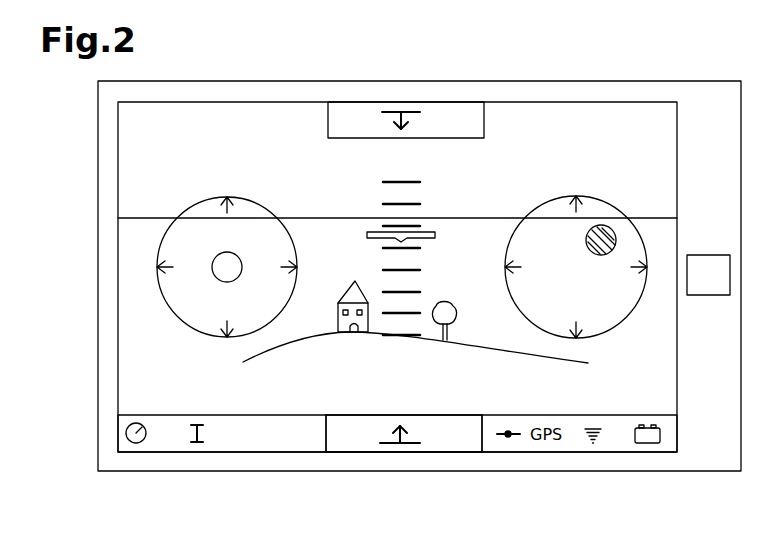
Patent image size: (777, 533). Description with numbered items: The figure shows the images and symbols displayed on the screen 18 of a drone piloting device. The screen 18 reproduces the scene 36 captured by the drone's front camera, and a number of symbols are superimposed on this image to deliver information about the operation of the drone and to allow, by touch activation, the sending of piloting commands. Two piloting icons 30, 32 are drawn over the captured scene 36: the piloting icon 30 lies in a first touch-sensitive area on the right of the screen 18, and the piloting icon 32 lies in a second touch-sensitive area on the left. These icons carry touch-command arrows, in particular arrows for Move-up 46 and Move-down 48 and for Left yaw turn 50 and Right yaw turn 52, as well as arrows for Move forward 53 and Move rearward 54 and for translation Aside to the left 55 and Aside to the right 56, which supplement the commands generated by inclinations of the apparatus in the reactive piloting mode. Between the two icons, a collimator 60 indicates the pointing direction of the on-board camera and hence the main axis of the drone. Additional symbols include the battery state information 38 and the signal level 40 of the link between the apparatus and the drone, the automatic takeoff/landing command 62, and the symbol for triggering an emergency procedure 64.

The screen 18 is at (590, 115).
The piloting icon 30 is at (610, 204).
The piloting icon 32 is at (197, 200).
The captured scene 36 is at (562, 372).
The battery state information 38 is at (647, 445).
The signal level 40 is at (596, 427).
The Move-up arrow 46 is at (578, 195).
The Move-down arrow 48 is at (577, 338).
The Left yaw turn arrow 50 is at (505, 267).
The Right yaw turn arrow 52 is at (647, 267).
The Move forward arrow 53 is at (228, 195).
The Move rearward arrow 54 is at (227, 338).
The Aside to the left arrow 55 is at (157, 267).
The Aside to the right arrow 56 is at (297, 267).
The collimator 60 is at (428, 232).
The automatic takeoff/landing command 62 is at (425, 442).
The emergency procedure trigger 64 is at (434, 112).